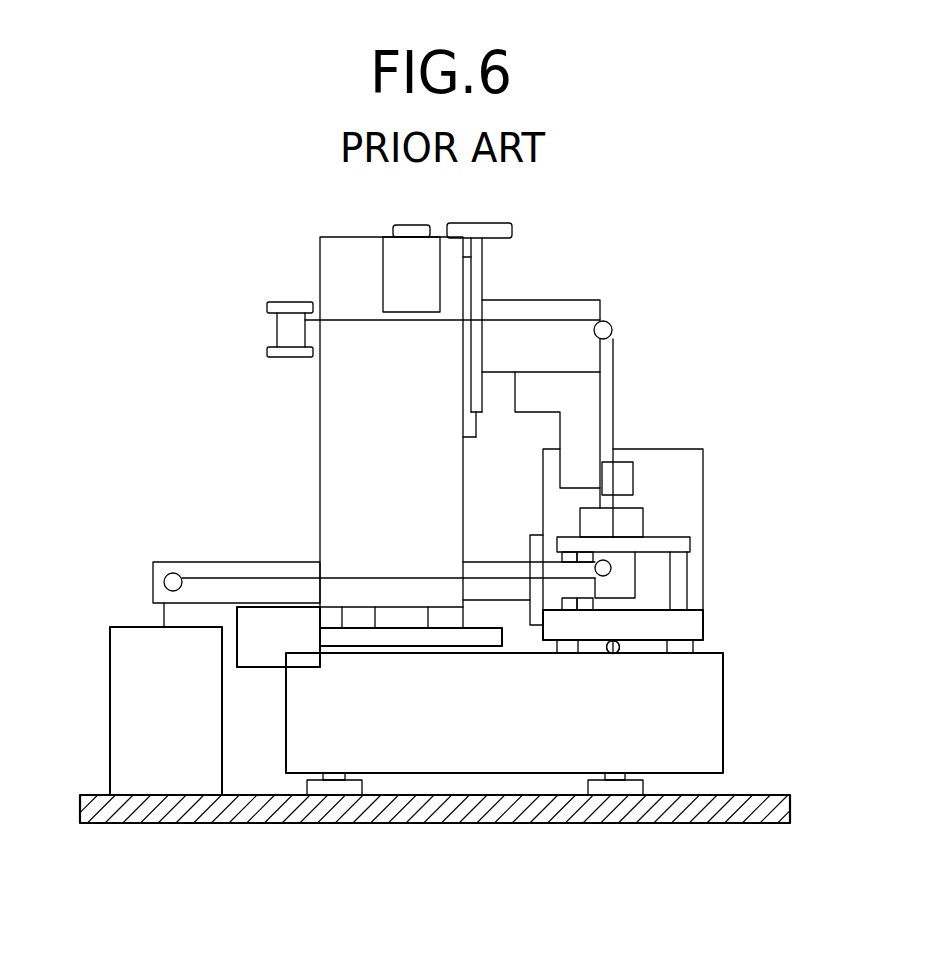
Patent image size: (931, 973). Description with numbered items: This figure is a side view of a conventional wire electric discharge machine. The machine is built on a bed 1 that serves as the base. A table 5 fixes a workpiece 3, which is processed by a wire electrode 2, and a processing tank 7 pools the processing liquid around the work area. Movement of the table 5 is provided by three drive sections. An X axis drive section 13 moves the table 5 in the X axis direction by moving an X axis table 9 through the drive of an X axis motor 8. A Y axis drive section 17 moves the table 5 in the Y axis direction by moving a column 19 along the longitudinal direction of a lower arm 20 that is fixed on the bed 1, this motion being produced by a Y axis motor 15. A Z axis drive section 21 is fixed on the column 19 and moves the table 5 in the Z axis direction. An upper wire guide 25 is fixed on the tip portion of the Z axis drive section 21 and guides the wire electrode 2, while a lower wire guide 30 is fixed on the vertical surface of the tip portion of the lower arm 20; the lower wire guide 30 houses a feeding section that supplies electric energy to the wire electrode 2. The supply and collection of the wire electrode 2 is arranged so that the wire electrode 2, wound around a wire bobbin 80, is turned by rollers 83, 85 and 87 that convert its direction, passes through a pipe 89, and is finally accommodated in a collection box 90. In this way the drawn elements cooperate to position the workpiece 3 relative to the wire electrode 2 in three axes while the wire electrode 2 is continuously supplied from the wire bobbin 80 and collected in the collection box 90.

The bed 1 is at (725, 708).
The wire electrode 2 is at (615, 360).
The workpiece 3 is at (645, 518).
The table 5 is at (692, 545).
The processing tank 7 is at (705, 485).
The X axis motor 8 is at (613, 654).
The X axis drive section 13 is at (613, 654).
The X axis table 9 is at (705, 628).
The Y axis motor 15 is at (268, 668).
The Y axis drive section 17 is at (317, 713).
The column 19 is at (325, 412).
The lower arm 20 is at (495, 560).
The Z axis drive section 21 is at (556, 298).
The upper wire guide 25 is at (634, 475).
The lower wire guide 30 is at (608, 573).
The wire bobbin 80 is at (265, 312).
The roller 83 is at (612, 323).
The roller 85 is at (590, 565).
The roller 87 is at (165, 575).
The pipe 89 is at (238, 560).
The collection box 90 is at (110, 705).